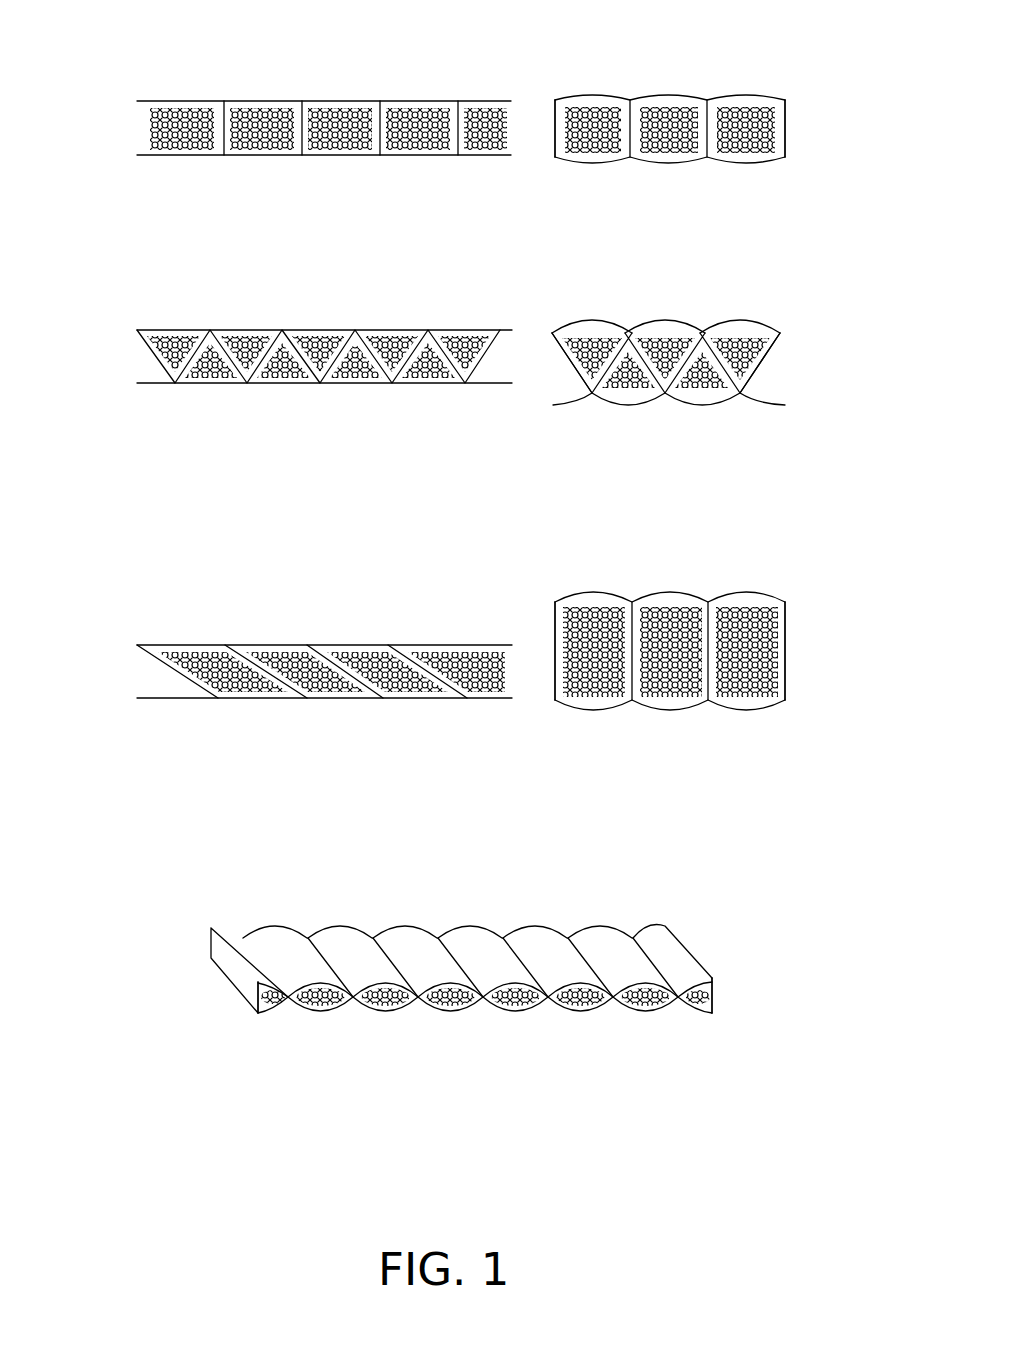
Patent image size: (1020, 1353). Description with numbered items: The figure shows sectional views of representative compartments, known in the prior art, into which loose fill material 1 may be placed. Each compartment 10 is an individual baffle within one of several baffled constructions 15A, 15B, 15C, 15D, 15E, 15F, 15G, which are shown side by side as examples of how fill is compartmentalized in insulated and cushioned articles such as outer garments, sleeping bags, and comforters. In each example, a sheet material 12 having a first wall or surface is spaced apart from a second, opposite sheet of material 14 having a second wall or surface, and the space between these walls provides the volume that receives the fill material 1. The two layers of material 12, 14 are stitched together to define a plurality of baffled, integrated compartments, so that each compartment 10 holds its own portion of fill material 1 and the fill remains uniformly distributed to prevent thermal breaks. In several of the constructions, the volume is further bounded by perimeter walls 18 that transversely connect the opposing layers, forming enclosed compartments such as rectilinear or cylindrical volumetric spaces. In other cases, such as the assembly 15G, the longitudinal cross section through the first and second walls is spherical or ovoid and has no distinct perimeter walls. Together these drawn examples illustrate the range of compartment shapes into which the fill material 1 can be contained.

The fill material 1 is at (268, 110).
The compartment 10 is at (140, 127).
The sheet material 12 is at (175, 330).
The second sheet of material 14 is at (273, 157).
The perimeter walls 18 is at (137, 146).
The baffled construction 15A is at (358, 77).
The baffled construction 15B is at (699, 77).
The baffled construction 15C is at (358, 283).
The baffled construction 15D is at (699, 283).
The baffled construction 15E is at (358, 572).
The baffled construction 15F is at (700, 527).
The baffled construction 15G is at (490, 884).